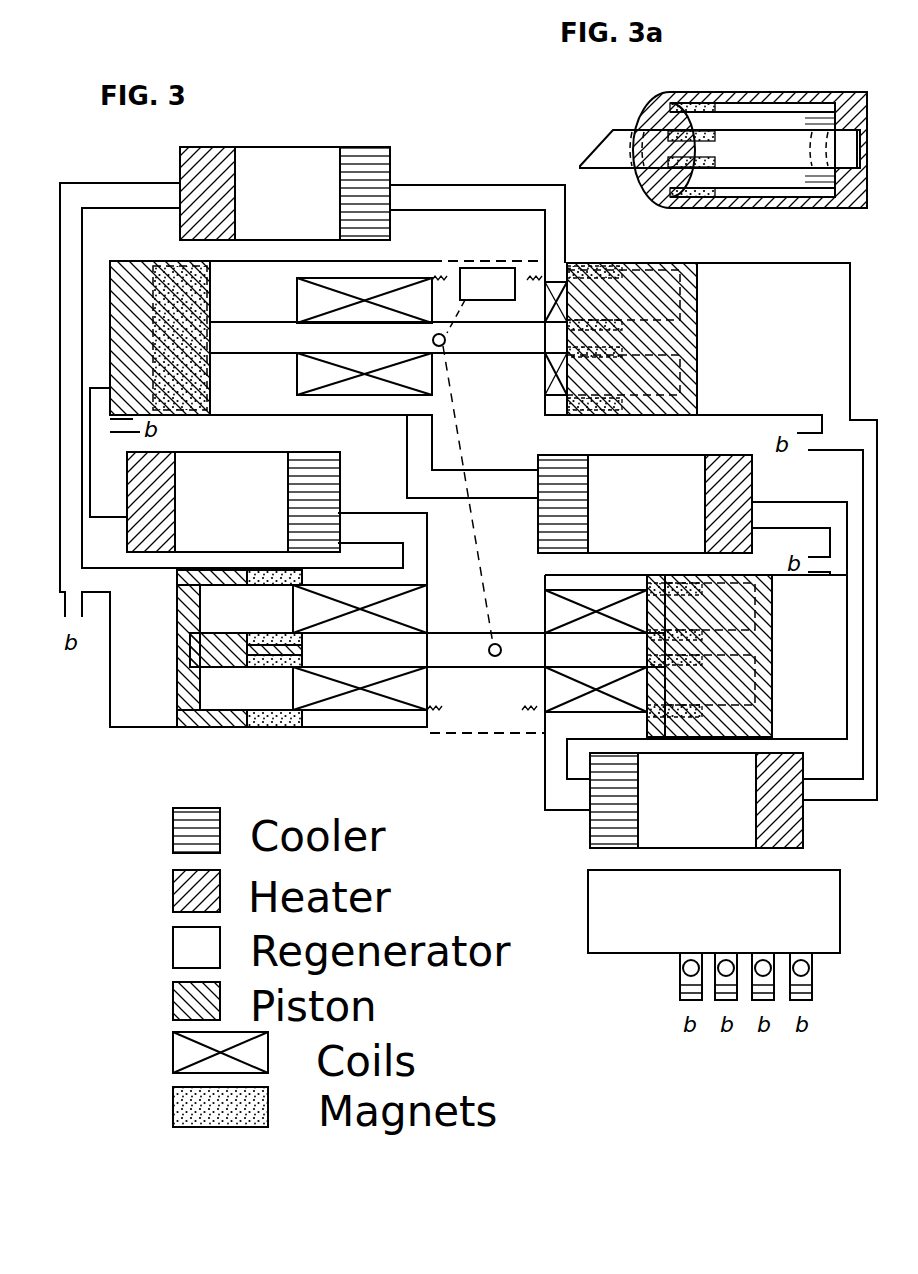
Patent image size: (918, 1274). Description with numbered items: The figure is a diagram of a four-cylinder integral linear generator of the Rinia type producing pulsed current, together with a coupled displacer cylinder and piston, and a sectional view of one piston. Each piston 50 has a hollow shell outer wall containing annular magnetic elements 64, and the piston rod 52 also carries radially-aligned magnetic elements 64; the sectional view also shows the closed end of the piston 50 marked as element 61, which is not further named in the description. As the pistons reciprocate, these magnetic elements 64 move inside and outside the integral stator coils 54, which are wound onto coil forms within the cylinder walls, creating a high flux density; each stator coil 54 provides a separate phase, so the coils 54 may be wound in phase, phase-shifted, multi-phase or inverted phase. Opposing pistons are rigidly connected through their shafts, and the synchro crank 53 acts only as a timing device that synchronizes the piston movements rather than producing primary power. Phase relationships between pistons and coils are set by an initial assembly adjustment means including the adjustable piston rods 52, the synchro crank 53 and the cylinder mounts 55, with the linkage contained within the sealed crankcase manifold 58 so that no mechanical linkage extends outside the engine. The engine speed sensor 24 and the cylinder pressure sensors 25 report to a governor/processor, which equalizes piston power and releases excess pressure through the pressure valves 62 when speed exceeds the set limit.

In FIG. 3, the engine speed sensor 24 is at (498, 268).
In FIG. 3, the cylinder pressure sensor 25 is at (680, 992).
In FIG. 3, the piston 50 is at (177, 710).
In FIG. 3A, the piston 50 is at (790, 92).
In FIG. 3A, the piston rod 52 is at (600, 130).
In FIG. 3, the synchro crank 53 is at (497, 644).
In FIG. 3, the stator coil 54 is at (400, 278).
In FIG. 3, the cylinder mount 55 is at (445, 716).
In FIG. 3, the crankcase manifold 58 is at (462, 268).
In FIG. 3A, the end cap 61 is at (850, 112).
In FIG. 3, the pressure valve 62 is at (680, 970).
In FIG. 3, the magnetic element 64 is at (583, 263).
In FIG. 3A, the magnetic element 64 is at (705, 92).